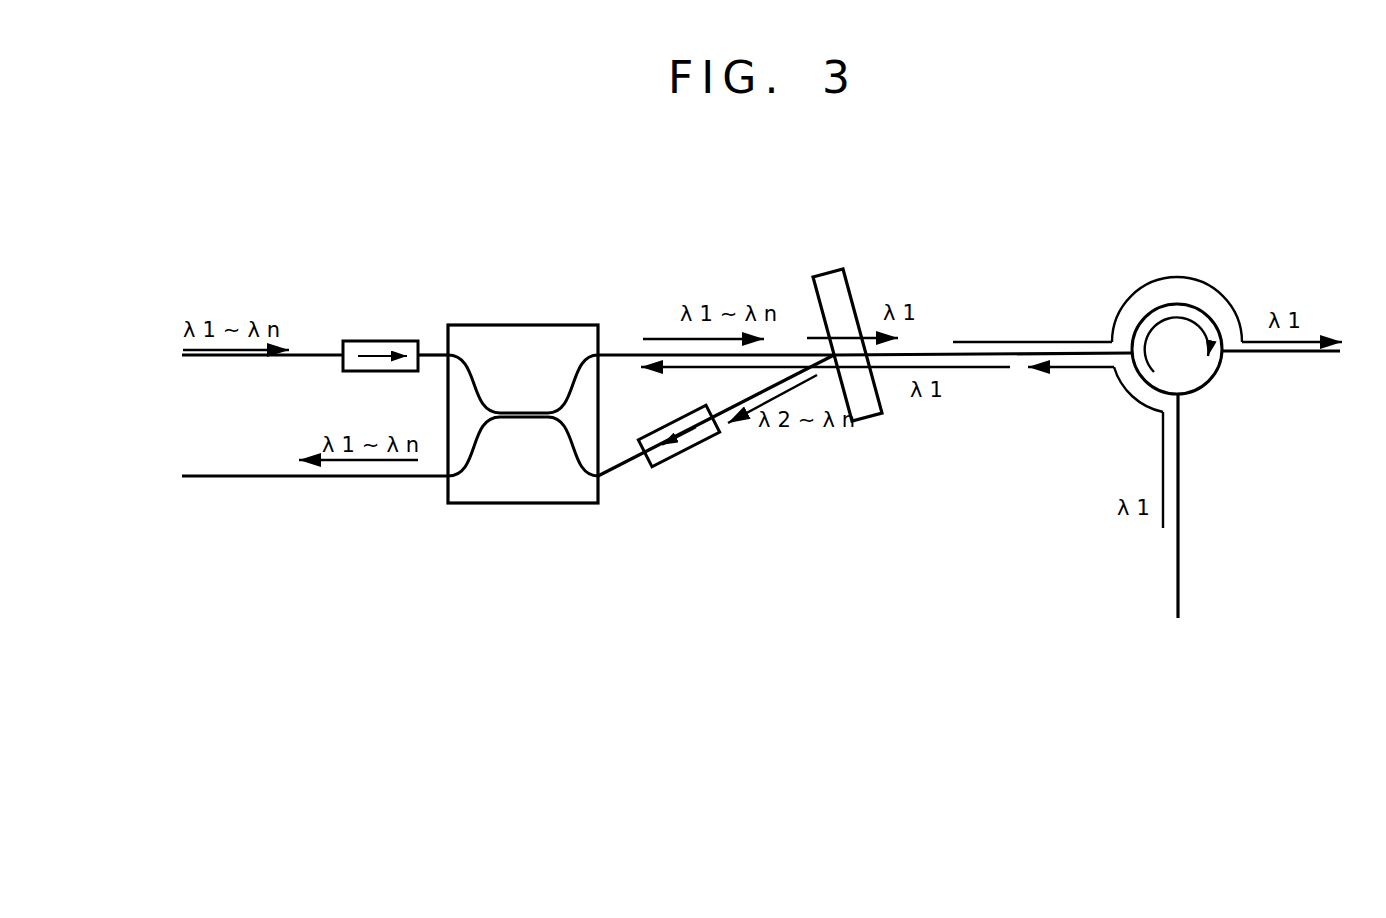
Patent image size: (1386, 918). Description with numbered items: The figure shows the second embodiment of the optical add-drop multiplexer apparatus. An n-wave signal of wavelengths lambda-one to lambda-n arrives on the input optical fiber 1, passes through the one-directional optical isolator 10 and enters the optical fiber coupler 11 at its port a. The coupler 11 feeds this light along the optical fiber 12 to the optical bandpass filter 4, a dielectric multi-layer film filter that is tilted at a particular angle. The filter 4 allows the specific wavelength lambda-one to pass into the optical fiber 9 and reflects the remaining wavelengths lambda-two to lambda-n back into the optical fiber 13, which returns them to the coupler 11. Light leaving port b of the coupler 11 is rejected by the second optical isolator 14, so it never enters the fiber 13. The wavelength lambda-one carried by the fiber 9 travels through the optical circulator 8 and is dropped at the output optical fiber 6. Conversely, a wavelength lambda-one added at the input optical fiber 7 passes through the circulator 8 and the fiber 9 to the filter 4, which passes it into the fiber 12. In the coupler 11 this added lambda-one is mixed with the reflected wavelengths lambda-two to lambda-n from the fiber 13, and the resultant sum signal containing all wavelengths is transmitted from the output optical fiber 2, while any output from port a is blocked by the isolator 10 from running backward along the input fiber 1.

The input optical fiber 1 is at (300, 360).
The output optical fiber 2 is at (298, 480).
The optical bandpass filter 4 is at (881, 418).
The output optical fiber 6 is at (1270, 354).
The input optical fiber 7 is at (1177, 560).
The optical circulator 8 is at (1210, 381).
The optical fiber 9 is at (940, 351).
The optical isolator 10 is at (373, 341).
The optical fiber coupler 11 is at (541, 505).
The optical fiber 12 is at (633, 353).
The optical fiber 13 is at (765, 390).
The optical isolator 14 is at (676, 459).
The port a is at (446, 355).
The port b is at (604, 478).